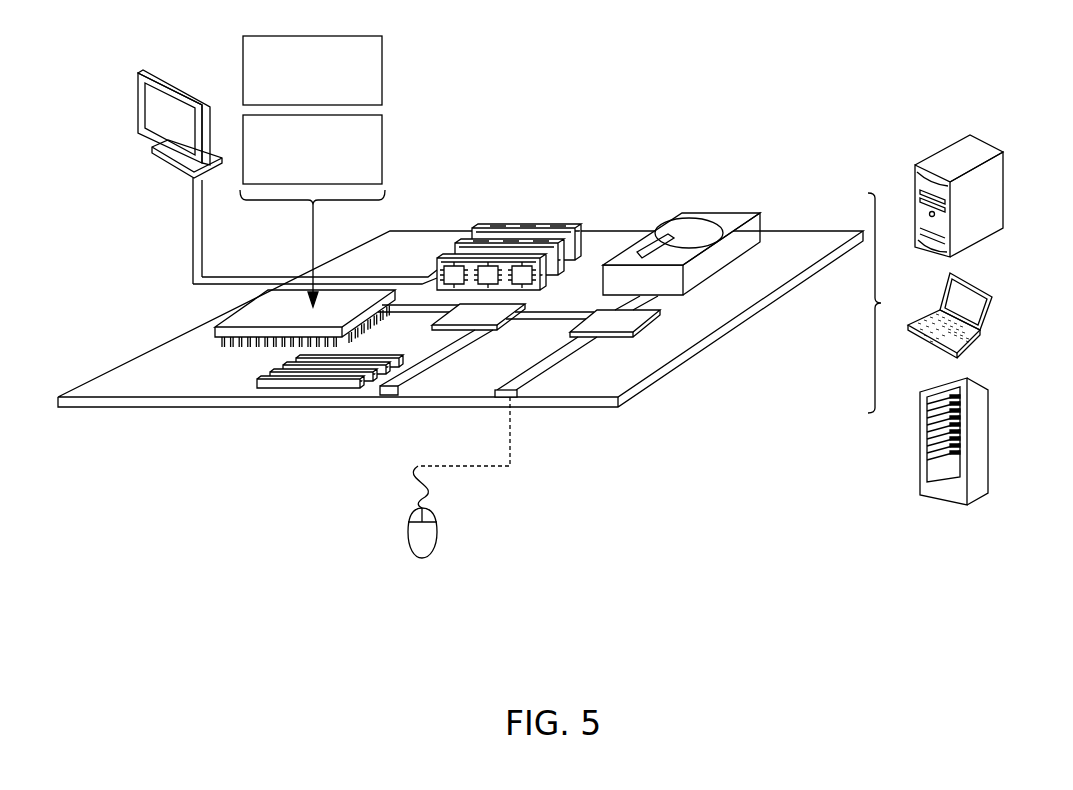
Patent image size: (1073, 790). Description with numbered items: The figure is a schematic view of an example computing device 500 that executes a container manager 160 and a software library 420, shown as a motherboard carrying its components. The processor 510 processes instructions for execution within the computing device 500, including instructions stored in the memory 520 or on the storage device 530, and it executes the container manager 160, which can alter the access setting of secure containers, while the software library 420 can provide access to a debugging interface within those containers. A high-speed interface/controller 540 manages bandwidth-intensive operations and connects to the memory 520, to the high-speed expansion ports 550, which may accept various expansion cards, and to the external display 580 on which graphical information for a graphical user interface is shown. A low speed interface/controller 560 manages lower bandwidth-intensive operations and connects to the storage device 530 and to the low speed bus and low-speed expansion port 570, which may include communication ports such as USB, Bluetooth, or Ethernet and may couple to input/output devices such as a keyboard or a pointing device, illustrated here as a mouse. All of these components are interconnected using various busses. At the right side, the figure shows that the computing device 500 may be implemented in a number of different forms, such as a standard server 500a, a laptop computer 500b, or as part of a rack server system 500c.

The computing device 500 is at (583, 124).
The standard server 500a is at (938, 148).
The laptop computer 500b is at (980, 290).
The rack server system 500c is at (985, 427).
The processor 510 is at (213, 327).
The memory 520 is at (520, 228).
The storage device 530 is at (718, 213).
The high-speed interface/controller 540 is at (482, 331).
The high-speed expansion ports 550 is at (258, 383).
The low speed interface/controller 560 is at (610, 318).
The low speed bus / low-speed expansion port 570 is at (515, 400).
The display 580 is at (137, 105).
The software library 420 is at (312, 70).
The container manager 160 is at (312, 149).